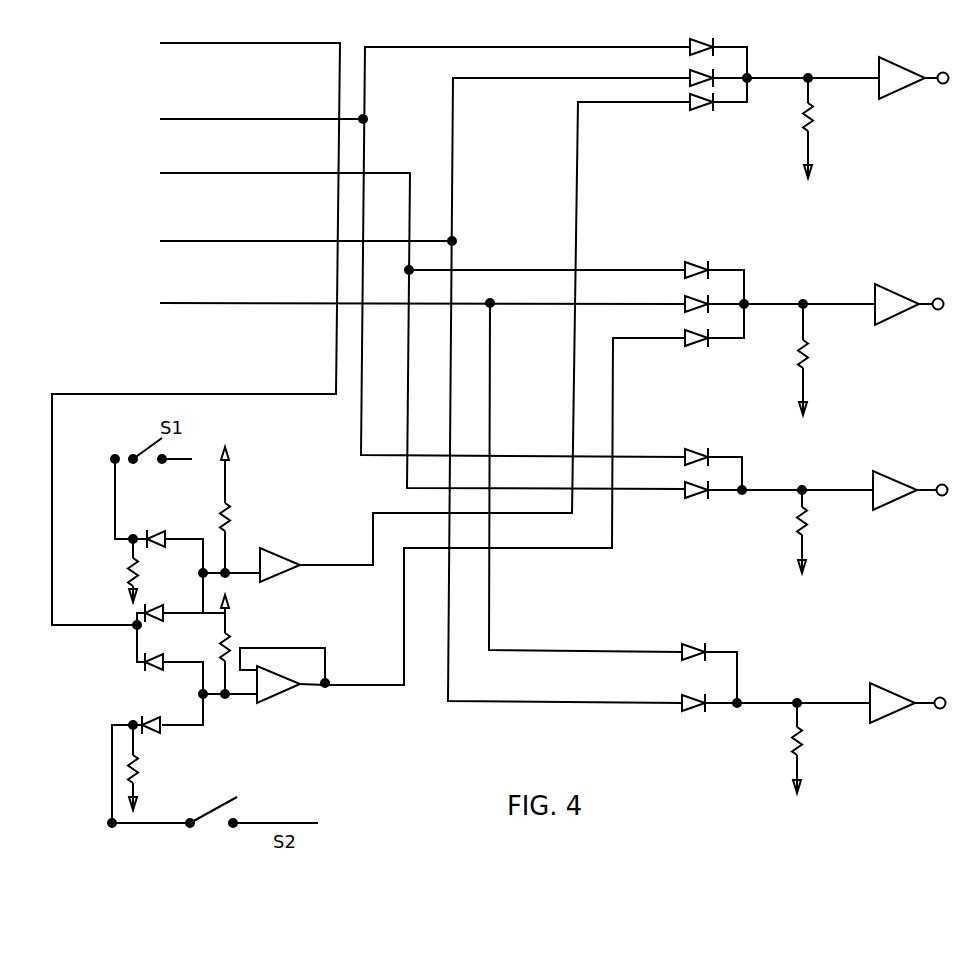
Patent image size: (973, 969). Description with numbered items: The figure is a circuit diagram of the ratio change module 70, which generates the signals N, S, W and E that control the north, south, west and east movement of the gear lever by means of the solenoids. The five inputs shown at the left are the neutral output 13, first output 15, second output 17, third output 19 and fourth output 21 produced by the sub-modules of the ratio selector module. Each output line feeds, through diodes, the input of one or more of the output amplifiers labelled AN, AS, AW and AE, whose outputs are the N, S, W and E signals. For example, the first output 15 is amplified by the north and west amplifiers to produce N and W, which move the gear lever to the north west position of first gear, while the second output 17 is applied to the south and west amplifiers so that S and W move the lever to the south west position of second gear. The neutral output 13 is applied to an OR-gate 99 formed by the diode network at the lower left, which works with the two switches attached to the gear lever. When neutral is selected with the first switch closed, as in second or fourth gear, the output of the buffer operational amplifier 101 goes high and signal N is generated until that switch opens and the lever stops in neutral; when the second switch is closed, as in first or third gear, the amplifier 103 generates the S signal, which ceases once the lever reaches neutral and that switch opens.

The neutral output signal 13 is at (196, 324).
The first output signal 15 is at (425, 252).
The second output signal 17 is at (422, 321).
The third output signal 19 is at (425, 390).
The fourth output signal 21 is at (422, 469).
The ratio change module 70 is at (797, 434).
The OR-gate 99 is at (156, 649).
The buffer operational amplifier 101 is at (291, 573).
The amplifier 103 is at (284, 686).